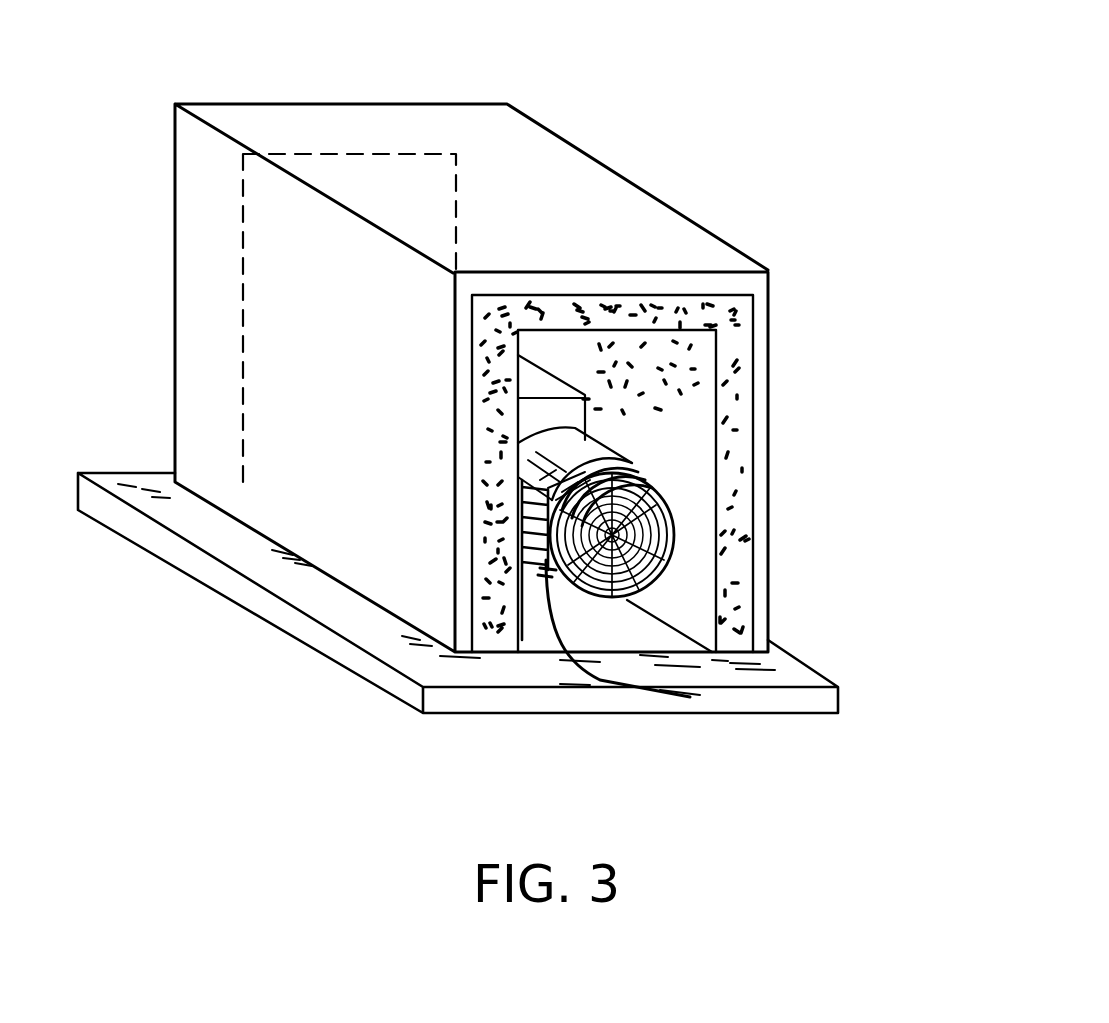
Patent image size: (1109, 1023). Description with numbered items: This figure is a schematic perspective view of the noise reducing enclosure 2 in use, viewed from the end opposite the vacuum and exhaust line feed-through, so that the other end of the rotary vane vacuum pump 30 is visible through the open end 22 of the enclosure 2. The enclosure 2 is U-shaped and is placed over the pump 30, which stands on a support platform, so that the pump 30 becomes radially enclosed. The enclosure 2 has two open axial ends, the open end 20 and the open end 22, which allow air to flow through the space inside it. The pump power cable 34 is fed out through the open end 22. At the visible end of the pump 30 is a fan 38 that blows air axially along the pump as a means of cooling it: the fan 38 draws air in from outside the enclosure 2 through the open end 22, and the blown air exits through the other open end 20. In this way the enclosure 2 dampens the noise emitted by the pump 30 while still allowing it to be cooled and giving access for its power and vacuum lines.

The enclosure 2 is at (655, 126).
The open end 20 is at (327, 183).
The open end 22 is at (673, 365).
The rotary vane vacuum pump 30 is at (562, 406).
The pump power cable 34 is at (607, 677).
The fan 38 is at (650, 558).